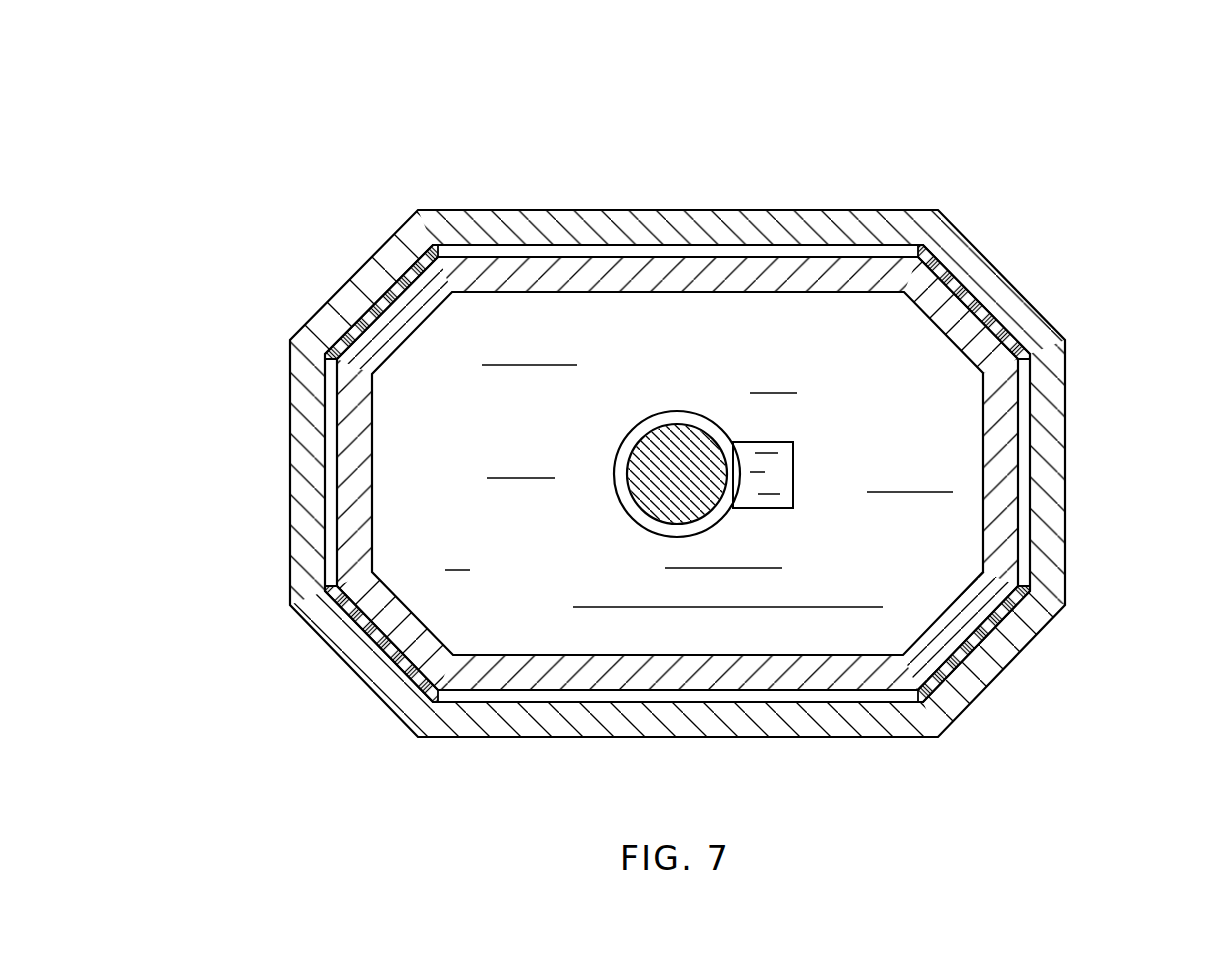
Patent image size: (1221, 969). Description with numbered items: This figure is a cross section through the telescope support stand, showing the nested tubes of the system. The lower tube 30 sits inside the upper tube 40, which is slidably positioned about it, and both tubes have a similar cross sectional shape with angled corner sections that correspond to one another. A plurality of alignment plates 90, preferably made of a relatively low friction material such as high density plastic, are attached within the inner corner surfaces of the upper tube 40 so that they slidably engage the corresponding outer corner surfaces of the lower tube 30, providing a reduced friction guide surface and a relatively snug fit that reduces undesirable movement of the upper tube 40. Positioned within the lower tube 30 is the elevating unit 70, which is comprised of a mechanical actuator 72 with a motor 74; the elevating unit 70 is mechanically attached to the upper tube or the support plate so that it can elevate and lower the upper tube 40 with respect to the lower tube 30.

The lower tube 30 is at (790, 275).
The upper tube 40 is at (645, 227).
The elevating unit 70 is at (793, 439).
The mechanical actuator 72 is at (713, 517).
The motor 74 is at (785, 470).
The alignment plates 90 is at (385, 300).